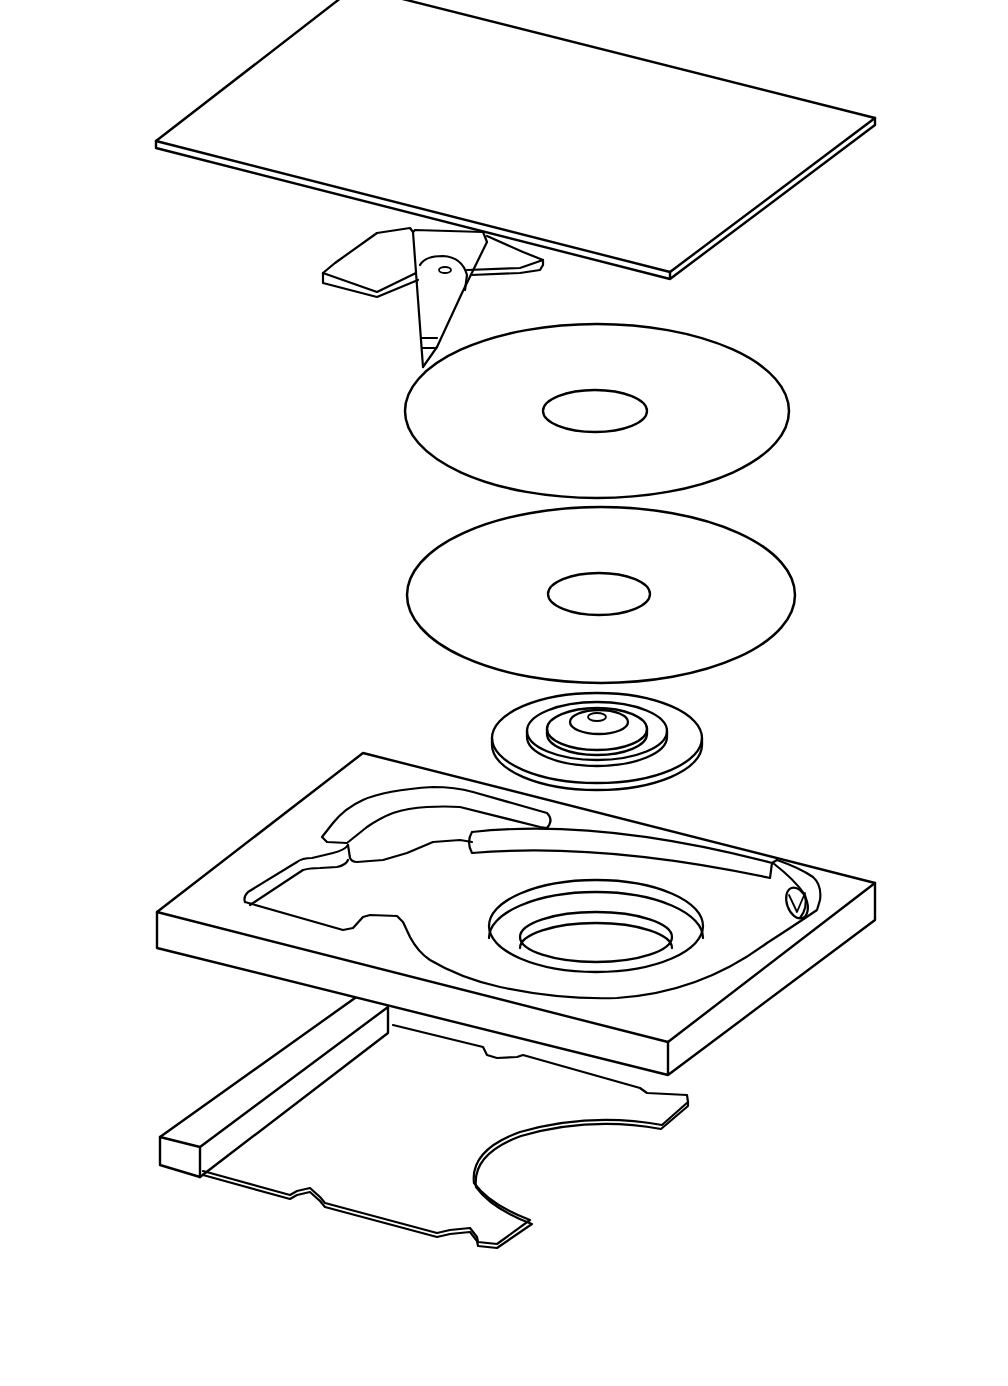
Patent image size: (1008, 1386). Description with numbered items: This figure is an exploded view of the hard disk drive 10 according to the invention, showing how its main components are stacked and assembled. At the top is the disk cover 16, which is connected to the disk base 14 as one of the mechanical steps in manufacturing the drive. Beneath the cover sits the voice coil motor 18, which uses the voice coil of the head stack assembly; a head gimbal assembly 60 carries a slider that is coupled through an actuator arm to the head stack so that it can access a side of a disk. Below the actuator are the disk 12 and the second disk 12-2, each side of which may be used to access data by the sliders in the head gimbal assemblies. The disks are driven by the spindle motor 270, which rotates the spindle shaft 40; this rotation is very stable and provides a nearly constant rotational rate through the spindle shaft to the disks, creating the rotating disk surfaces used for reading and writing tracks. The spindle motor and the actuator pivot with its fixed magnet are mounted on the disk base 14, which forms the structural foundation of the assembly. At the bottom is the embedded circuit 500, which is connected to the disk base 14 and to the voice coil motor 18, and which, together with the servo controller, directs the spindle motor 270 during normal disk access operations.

The hard disk drive 10 is at (95, 0).
The disk cover 16 is at (783, 198).
The voice coil motor 18 is at (298, 230).
The head gimbal assembly 60 is at (420, 348).
The disk 12 is at (767, 453).
The second disk 12-2 is at (793, 612).
The spindle motor 270 is at (673, 741).
The spindle shaft 40 is at (627, 725).
The disk base 14 is at (790, 983).
The embedded circuit 500 is at (670, 1117).